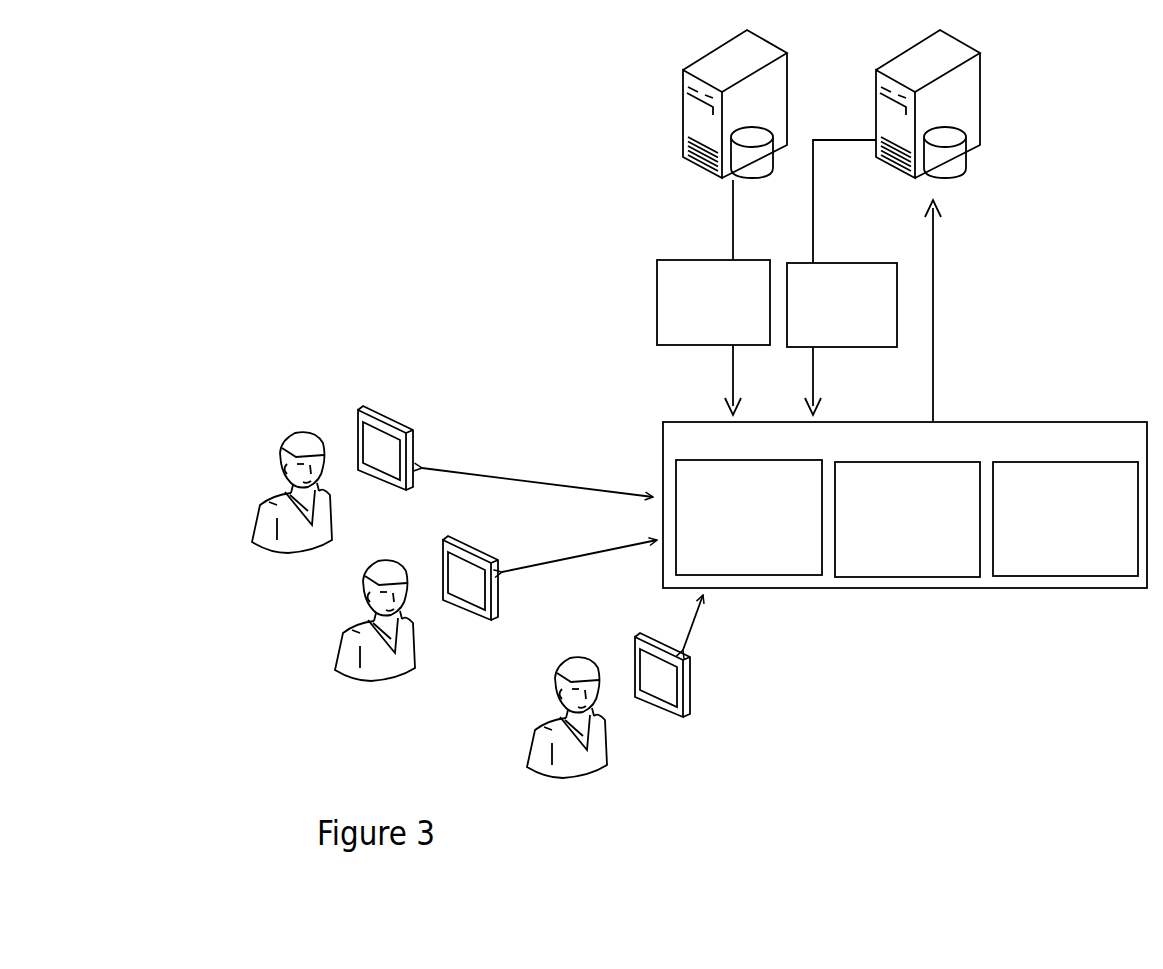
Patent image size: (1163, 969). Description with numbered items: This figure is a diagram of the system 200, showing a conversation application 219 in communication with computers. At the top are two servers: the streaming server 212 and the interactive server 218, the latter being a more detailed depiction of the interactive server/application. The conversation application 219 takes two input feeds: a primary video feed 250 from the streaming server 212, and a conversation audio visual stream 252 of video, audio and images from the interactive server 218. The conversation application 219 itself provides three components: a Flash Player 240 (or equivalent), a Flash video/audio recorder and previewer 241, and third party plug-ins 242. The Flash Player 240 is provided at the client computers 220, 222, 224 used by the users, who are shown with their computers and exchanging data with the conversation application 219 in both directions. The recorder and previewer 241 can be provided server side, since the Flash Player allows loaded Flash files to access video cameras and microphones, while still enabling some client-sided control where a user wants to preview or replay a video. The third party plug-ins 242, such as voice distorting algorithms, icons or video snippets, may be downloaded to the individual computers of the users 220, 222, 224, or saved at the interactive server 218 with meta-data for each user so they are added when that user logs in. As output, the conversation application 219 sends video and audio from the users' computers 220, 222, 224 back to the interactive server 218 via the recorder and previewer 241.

The system 200 is at (553, 275).
The streaming server 212 is at (737, 117).
The interactive server 218 is at (930, 117).
The conversation application 219 is at (999, 457).
The user computer 220 is at (600, 728).
The user computer 222 is at (345, 653).
The user computer 224 is at (280, 472).
The Flash Player 240 is at (734, 535).
The Flash video/audio recorder and previewer 241 is at (887, 540).
The third party plug-ins 242 is at (1049, 540).
The primary video feed 250 is at (691, 315).
The conversation audio visual stream 252 is at (814, 315).